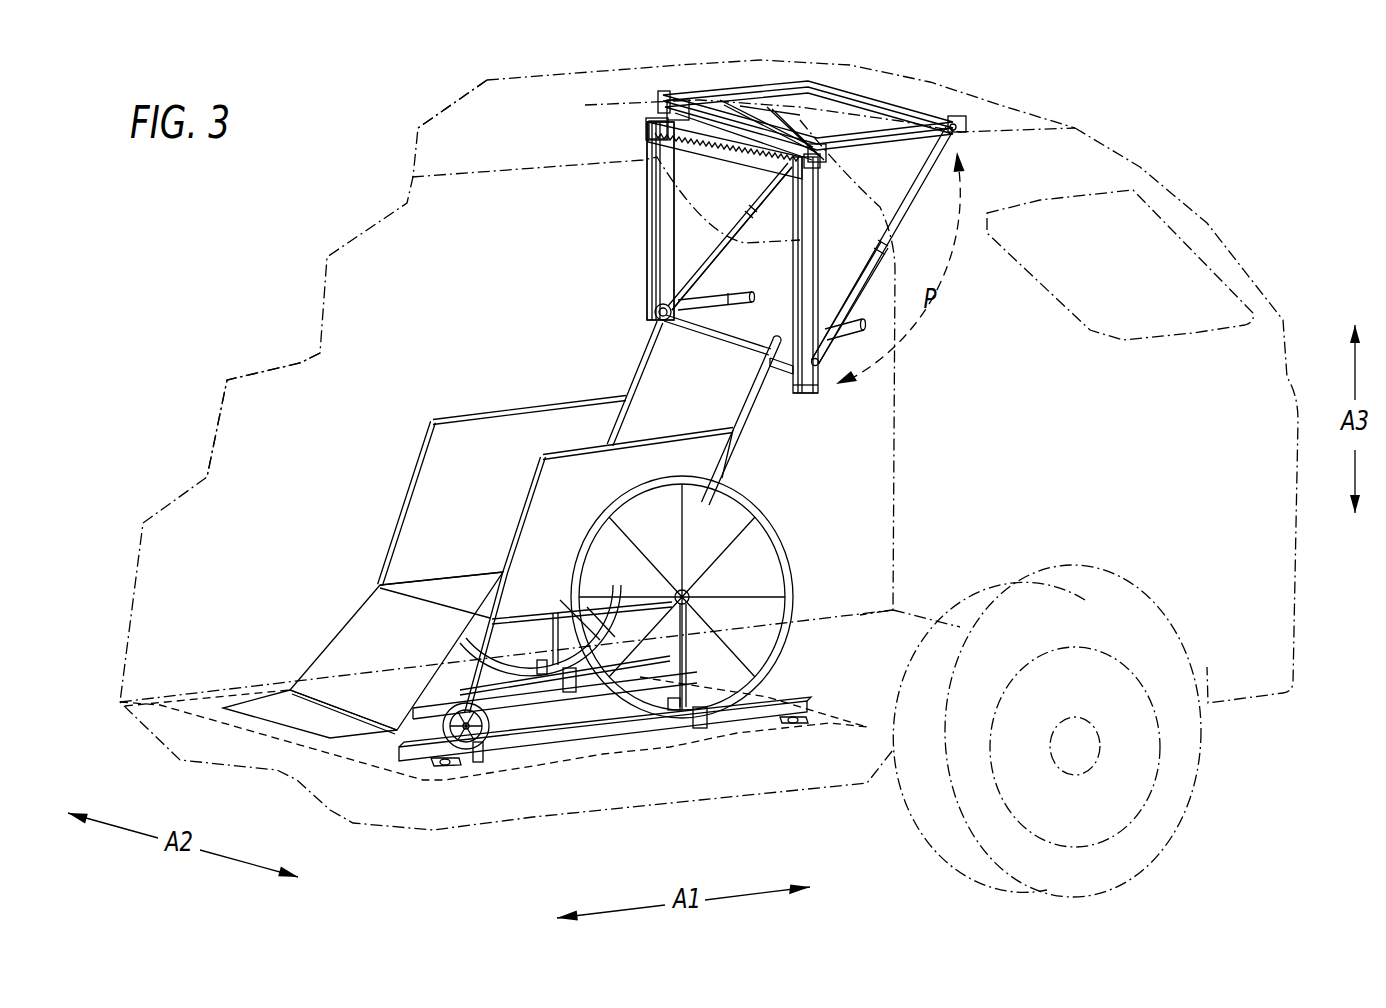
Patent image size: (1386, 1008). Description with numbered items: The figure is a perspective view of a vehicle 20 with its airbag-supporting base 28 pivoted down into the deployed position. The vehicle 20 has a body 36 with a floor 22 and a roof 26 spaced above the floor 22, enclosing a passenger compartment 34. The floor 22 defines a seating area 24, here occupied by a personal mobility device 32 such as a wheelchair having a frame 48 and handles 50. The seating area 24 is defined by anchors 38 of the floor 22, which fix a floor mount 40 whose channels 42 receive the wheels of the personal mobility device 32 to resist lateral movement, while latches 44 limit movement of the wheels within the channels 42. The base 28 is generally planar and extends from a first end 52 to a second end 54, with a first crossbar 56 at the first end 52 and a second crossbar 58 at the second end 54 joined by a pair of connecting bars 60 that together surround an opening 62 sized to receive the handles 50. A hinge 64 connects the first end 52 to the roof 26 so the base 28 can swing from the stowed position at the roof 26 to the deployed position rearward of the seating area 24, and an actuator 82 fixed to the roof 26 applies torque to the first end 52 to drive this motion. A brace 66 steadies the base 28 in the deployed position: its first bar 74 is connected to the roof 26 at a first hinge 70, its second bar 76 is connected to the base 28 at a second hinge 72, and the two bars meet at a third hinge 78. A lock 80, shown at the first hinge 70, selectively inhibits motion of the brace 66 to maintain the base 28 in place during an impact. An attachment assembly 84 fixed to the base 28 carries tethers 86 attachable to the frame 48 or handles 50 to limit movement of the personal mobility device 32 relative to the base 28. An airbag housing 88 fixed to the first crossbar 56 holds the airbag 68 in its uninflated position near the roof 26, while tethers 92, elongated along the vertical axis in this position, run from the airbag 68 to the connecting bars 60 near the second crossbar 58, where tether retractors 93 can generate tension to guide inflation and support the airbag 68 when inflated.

The vehicle 20 is at (1297, 603).
The floor 22 is at (400, 810).
The seating area 24 is at (202, 698).
The roof 26 is at (580, 68).
The base 28 is at (667, 207).
The personal mobility device 32 is at (460, 458).
The passenger compartment 34 is at (255, 402).
The body 36 is at (472, 130).
The anchors 38 is at (443, 767).
The floor mount 40 is at (780, 682).
The channels 42 is at (560, 737).
The latches 44 is at (473, 760).
The frame 48 is at (745, 452).
The handles 50 is at (740, 293).
The first end 52 is at (680, 100).
The second end 54 is at (773, 382).
The first crossbar 56 is at (723, 140).
The second crossbar 58 is at (767, 385).
The connecting bars 60 is at (650, 233).
The opening 62 is at (676, 266).
The hinge 64 is at (833, 158).
The brace 66 is at (938, 228).
The airbag 68 is at (647, 142).
The first hinge 70 is at (952, 137).
The second hinge 72 is at (813, 397).
The first bar 74 is at (923, 192).
The second bar 76 is at (865, 300).
The third hinge 78 is at (887, 247).
The lock 80 is at (965, 100).
The actuator 82 is at (663, 88).
The attachment assembly 84 is at (653, 307).
The tethers 86 is at (657, 312).
The airbag housing 88 is at (647, 137).
The tethers 92 is at (650, 250).
The tether retractors 93 is at (810, 397).